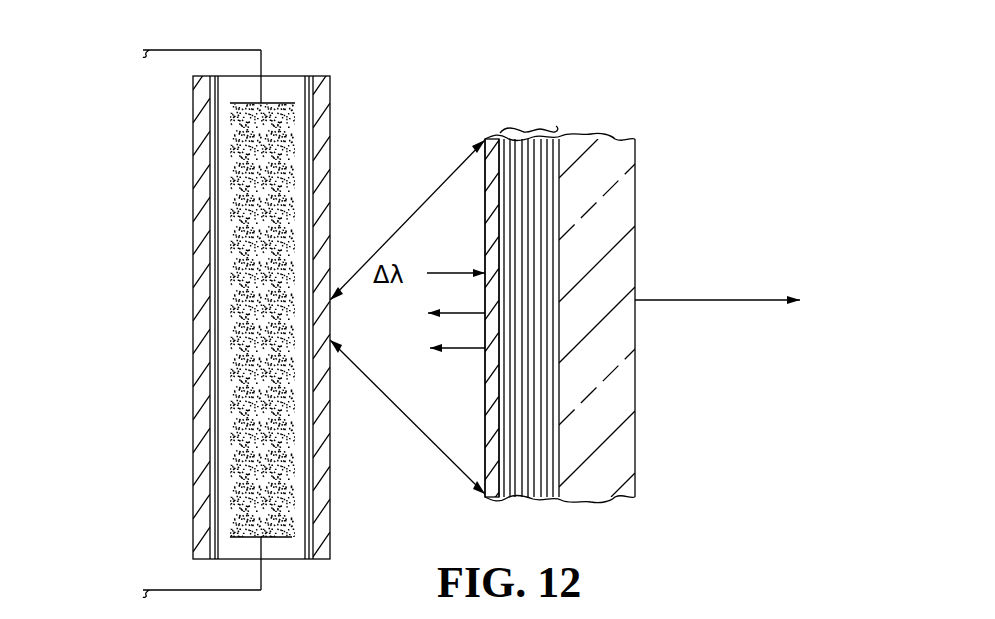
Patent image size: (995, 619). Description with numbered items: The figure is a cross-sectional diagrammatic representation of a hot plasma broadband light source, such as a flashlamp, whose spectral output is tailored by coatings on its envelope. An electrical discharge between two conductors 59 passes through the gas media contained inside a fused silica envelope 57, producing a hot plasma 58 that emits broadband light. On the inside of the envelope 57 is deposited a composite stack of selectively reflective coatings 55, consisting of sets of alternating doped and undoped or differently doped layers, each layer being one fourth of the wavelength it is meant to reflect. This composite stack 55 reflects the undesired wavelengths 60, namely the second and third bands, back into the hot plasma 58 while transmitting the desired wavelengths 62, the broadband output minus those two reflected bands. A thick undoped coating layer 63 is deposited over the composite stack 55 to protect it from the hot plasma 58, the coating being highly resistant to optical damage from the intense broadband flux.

The composite stack of selectively reflective coatings 55 is at (328, 163).
The fused silica envelope 57 is at (617, 138).
The hot plasma 58 is at (280, 147).
The conductors 59 is at (248, 50).
The undesired wavelengths 60 is at (465, 313).
The desired wavelengths 62 is at (687, 298).
The thick undoped coating layer 63 is at (490, 138).